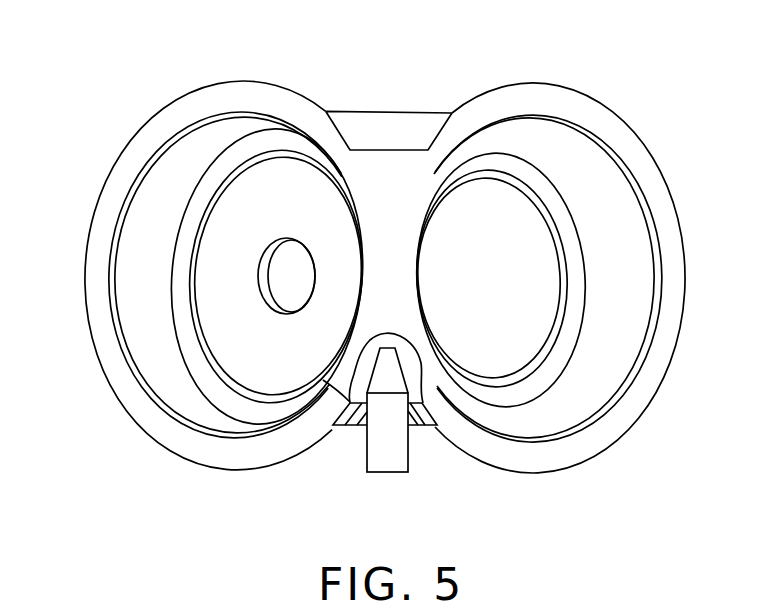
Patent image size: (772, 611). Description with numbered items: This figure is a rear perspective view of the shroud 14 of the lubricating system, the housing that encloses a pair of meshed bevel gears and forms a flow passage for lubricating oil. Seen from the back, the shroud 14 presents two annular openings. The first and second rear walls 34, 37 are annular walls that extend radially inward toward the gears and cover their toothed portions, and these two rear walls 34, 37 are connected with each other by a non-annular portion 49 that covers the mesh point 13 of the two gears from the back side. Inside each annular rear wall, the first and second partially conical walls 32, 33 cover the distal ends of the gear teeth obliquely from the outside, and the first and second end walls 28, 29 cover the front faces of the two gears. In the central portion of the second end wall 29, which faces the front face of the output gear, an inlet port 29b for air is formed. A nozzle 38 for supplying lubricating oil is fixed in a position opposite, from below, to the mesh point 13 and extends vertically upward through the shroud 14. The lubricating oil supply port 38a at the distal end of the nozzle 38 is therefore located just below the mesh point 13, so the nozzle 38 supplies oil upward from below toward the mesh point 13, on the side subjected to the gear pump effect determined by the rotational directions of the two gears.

The shroud 14 is at (302, 82).
The non-annular portion 49 is at (387, 177).
The second rear wall 37 is at (120, 186).
The first rear wall 34 is at (654, 191).
The inlet port 29b is at (283, 250).
The mesh point 13 is at (390, 260).
The second partially conical wall 33 is at (146, 277).
The first partially conical wall 32 is at (628, 283).
The lubricating oil supply port 38a is at (389, 348).
The second end wall 29 is at (233, 328).
The first end wall 28 is at (540, 331).
The nozzle 38 is at (391, 456).